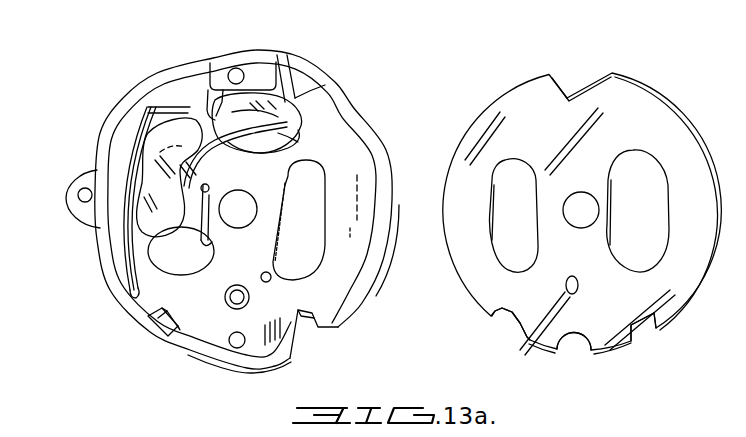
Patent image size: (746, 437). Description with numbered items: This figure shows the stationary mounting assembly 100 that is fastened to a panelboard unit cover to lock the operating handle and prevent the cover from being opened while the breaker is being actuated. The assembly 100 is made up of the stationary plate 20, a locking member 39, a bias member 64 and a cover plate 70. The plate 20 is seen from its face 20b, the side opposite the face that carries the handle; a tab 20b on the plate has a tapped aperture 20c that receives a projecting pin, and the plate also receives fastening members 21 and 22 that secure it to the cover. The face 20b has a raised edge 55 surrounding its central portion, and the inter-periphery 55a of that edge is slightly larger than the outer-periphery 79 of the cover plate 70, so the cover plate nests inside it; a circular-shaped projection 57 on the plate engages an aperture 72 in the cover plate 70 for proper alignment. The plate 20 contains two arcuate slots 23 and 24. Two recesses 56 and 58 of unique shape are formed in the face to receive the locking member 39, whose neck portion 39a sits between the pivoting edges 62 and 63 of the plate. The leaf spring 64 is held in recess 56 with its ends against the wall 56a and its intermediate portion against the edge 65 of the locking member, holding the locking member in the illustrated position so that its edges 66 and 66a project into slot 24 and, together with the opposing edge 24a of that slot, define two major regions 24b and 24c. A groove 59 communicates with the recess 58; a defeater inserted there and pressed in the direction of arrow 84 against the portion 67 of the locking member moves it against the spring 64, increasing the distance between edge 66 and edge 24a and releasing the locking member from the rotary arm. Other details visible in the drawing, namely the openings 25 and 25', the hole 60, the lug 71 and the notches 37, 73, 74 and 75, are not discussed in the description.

The stationary plate 20 is at (374, 290).
The face of stationary plate 20b is at (72, 218).
The tapped aperture 20c is at (78, 195).
The fastening member 21 is at (237, 349).
The fastening member 22 is at (236, 67).
The arcuate slot 23 is at (405, 219).
The arcuate slot 24 is at (201, 271).
The opposing edge of slot 24a is at (209, 189).
The major region 24b is at (181, 251).
The major region 24c is at (193, 171).
The central hole 25 is at (247, 202).
The central hole 25' is at (581, 189).
The notch 37 is at (314, 333).
The locking member 39 is at (162, 118).
The neck portion 39a is at (170, 128).
The raised edge 55 is at (354, 107).
The inter-periphery 55a is at (348, 137).
The recess 56 is at (118, 262).
The wall of recess 56a is at (130, 127).
The circular-shaped projection 57 is at (226, 301).
The recess 58 is at (288, 139).
The groove 59 is at (299, 66).
The hole 60 is at (266, 282).
The pivoting edge 62 is at (207, 112).
The pivoting edge 63 is at (240, 181).
The leaf spring member 64 is at (124, 232).
The edge of locking member 65 is at (127, 187).
The edge of locking member 66 is at (210, 228).
The edge of locking member 66a is at (213, 250).
The portion of locking member 67 is at (278, 115).
The cover plate 70 is at (540, 74).
The lug 71 is at (150, 330).
The aperture in cover member 72 is at (578, 286).
The notch 73 is at (645, 330).
The notch 74 is at (570, 350).
The notch 75 is at (590, 85).
The outer-periphery of cover plate 79 is at (640, 78).
The arrow 84 is at (291, 53).
The stationary mounting assembly 100 is at (85, 352).